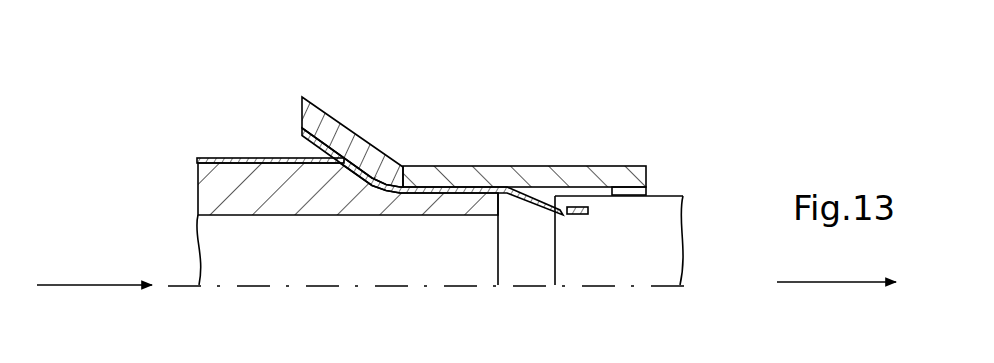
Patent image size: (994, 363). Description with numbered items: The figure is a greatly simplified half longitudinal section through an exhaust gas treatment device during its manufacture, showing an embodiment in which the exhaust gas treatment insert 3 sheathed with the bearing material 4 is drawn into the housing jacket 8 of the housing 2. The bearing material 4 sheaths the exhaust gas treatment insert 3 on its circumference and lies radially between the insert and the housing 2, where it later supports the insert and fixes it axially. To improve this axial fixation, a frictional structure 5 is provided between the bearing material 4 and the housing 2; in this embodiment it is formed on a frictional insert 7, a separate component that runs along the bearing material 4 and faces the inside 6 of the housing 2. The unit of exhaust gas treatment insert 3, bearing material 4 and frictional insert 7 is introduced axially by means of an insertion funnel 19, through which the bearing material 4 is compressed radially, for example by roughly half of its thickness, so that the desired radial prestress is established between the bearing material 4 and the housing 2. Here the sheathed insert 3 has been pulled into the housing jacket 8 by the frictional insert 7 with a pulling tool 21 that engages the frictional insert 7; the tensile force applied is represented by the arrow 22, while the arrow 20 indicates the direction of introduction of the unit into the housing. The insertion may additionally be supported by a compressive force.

The housing 2 is at (599, 164).
The exhaust gas treatment insert 3 is at (325, 262).
The bearing material 4 is at (293, 215).
The frictional structure 5 is at (268, 156).
The inside of the housing 6 is at (612, 196).
The frictional insert 7 is at (525, 216).
The housing jacket 8 is at (502, 170).
The insertion funnel 19 is at (353, 130).
The arrow 20 is at (88, 285).
The pulling tool 21 is at (593, 250).
The arrow 22 is at (830, 283).